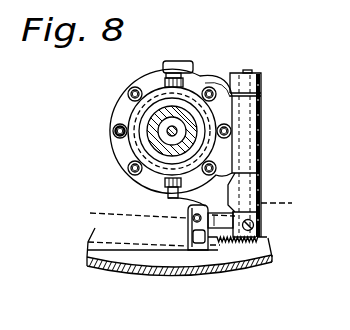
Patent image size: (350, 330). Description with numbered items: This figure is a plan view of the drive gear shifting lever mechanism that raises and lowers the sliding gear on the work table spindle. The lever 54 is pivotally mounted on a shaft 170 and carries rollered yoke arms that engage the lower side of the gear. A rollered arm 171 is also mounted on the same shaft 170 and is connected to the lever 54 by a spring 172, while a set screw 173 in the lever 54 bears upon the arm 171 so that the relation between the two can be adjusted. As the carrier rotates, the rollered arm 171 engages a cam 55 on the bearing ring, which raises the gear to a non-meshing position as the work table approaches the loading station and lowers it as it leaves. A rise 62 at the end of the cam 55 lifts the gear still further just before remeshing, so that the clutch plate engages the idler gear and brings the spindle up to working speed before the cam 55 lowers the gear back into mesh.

The lever 54 is at (193, 67).
The shaft 170 is at (249, 73).
The cam 55 is at (100, 237).
The set screw 173 is at (195, 218).
The rollered arm 171 is at (259, 214).
The rise 62 is at (180, 243).
The spring 172 is at (225, 242).